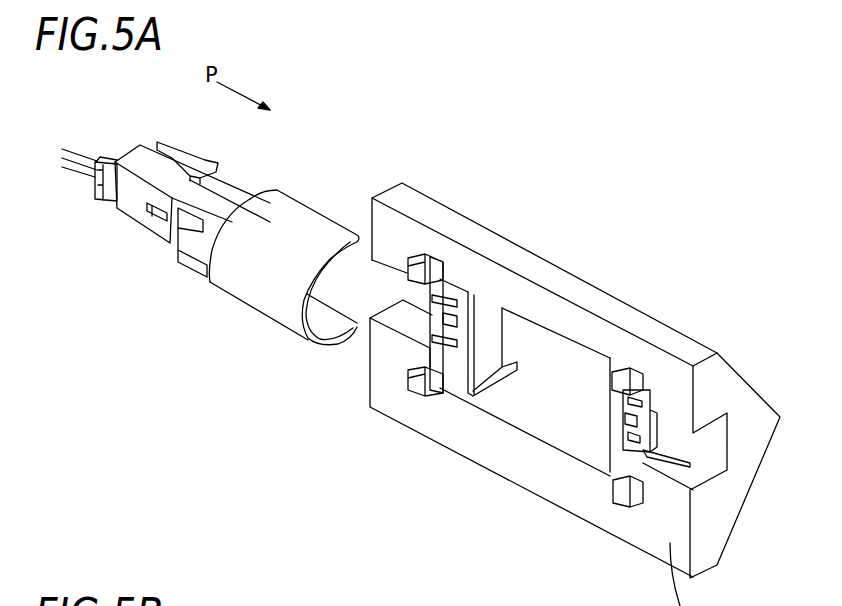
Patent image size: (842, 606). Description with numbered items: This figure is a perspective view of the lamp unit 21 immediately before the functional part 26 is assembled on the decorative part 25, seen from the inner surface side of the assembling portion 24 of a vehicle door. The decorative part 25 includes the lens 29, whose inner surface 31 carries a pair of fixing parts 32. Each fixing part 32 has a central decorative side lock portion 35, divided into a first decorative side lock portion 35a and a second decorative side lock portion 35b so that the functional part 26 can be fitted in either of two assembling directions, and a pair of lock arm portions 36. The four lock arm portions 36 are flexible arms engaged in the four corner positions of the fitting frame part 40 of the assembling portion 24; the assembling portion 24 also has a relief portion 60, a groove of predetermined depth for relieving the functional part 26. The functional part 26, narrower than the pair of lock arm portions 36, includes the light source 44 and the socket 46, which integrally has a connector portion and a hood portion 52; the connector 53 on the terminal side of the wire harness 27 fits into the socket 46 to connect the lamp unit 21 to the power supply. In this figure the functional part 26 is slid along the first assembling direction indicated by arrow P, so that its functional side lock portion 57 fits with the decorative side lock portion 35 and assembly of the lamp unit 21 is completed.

The lamp unit 21 is at (140, 382).
The assembling portion 24 is at (568, 290).
The decorative part 25 is at (560, 415).
The functional part 26 is at (155, 430).
The wire harness 27 is at (72, 153).
The lens 29 is at (582, 428).
The inner surface 31 is at (579, 352).
The fixing part 32 is at (489, 313).
The decorative side lock portion 35 is at (536, 362).
The first decorative side lock portion 35a is at (398, 312).
The second decorative side lock portion 35b is at (643, 413).
The lock arm portion 36 is at (413, 258).
The fitting frame part 40 is at (517, 422).
The light source 44 is at (270, 262).
The socket 46 is at (138, 212).
The hood portion 52 is at (264, 302).
The connector 53 is at (99, 192).
The functional side lock portion 57 is at (178, 141).
The relief portion 60 is at (422, 339).